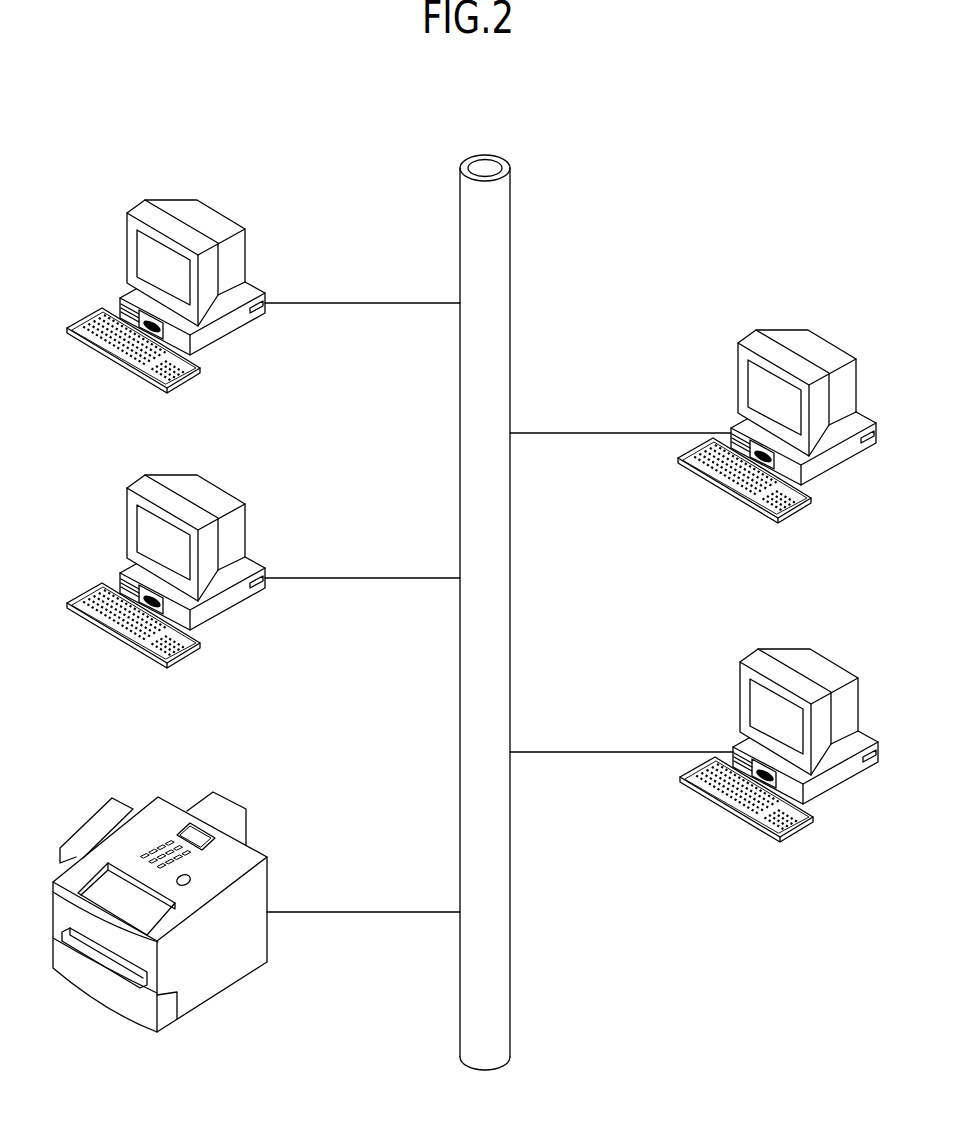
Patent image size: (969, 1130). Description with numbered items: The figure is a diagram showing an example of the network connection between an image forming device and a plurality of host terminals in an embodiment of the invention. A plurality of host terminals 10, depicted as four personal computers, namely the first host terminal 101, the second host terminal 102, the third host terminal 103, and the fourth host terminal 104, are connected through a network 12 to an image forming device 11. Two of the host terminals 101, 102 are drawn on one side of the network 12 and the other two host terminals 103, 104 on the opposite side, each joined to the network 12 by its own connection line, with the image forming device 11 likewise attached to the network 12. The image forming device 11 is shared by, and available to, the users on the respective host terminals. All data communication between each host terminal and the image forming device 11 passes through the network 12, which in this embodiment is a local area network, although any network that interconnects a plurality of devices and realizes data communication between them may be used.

The host terminals 10 is at (480, 513).
The host terminal 101 is at (225, 214).
The host terminal 102 is at (225, 489).
The host terminal 103 is at (830, 342).
The host terminal 104 is at (840, 665).
The image forming device 11 is at (252, 855).
The network 12 is at (502, 157).